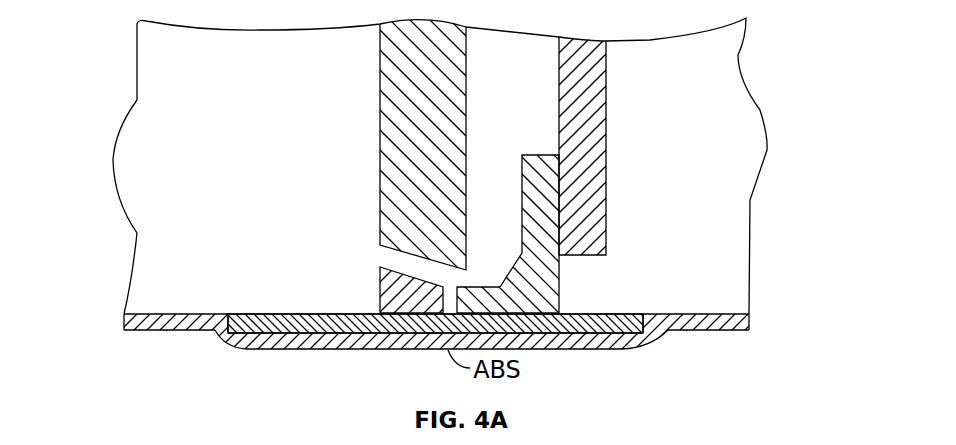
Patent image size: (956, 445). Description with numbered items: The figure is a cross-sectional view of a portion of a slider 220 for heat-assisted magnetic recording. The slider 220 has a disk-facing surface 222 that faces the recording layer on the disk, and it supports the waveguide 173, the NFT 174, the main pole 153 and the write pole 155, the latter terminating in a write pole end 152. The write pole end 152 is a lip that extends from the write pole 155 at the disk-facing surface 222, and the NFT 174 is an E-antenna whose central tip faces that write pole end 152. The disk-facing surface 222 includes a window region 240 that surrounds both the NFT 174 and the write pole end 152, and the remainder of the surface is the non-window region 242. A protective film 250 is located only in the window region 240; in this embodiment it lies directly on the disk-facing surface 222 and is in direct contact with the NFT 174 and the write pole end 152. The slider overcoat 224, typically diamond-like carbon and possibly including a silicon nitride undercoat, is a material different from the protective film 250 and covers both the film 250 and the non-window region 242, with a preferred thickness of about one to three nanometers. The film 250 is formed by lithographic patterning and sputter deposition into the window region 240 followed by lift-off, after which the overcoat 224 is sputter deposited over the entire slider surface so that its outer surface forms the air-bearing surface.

The slider 220 is at (148, 82).
The disk-facing surface 222 is at (124, 313).
The slider overcoat 224 is at (200, 332).
The window region 240 is at (275, 314).
The non-window region 242 is at (178, 313).
The protective film 250 is at (573, 330).
The write pole end 152 is at (473, 292).
The main pole 153 is at (570, 90).
The write pole 155 is at (535, 160).
The waveguide 173 is at (394, 97).
The NFT 174 is at (380, 292).